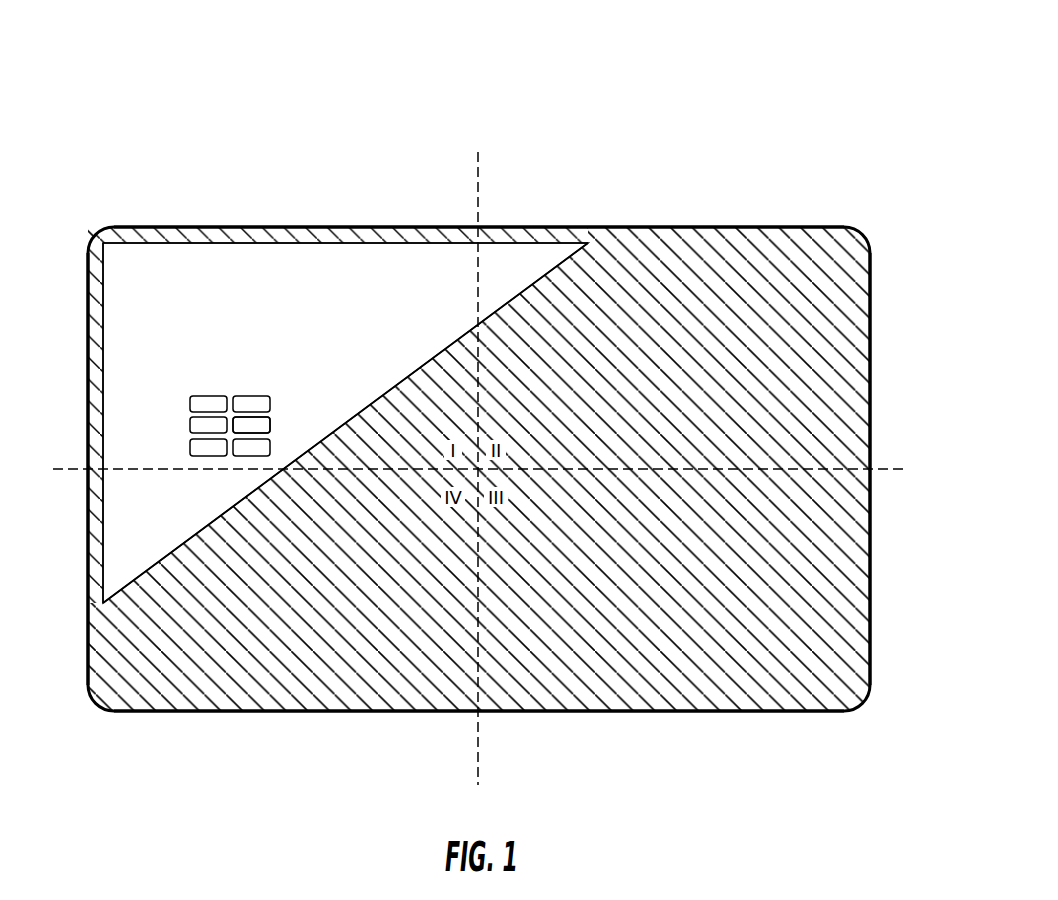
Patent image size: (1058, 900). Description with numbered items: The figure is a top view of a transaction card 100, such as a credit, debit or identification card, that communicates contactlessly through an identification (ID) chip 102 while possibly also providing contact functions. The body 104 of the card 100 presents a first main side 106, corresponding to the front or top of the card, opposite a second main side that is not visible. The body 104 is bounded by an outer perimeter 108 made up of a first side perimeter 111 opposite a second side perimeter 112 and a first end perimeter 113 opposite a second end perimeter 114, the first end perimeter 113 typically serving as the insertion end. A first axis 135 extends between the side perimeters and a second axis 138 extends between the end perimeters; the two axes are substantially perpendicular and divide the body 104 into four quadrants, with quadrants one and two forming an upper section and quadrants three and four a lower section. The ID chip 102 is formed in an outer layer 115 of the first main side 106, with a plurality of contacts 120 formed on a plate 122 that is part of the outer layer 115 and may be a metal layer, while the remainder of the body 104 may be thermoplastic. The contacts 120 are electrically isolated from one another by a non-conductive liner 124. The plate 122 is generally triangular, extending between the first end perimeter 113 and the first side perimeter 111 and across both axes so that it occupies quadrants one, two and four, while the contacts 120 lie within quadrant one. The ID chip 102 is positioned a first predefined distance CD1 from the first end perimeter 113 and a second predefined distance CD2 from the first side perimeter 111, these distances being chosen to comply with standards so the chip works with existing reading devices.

The transaction card 100 is at (646, 115).
The identification (ID) chip 102 is at (181, 425).
The body 104 is at (792, 228).
The first main side 106 is at (689, 248).
The outer perimeter 108 is at (258, 712).
The first side perimeter 111 is at (381, 227).
The second side perimeter 112 is at (605, 713).
The first end perimeter 113 is at (88, 310).
The second end perimeter 114 is at (870, 337).
The outer layer 115 is at (167, 670).
The contacts 120 is at (253, 402).
The plate 122 is at (263, 265).
The liner 124 is at (270, 427).
The first axis 135 is at (479, 172).
The second axis 138 is at (885, 470).
The first predefined distance CD1 is at (190, 446).
The second predefined distance CD2 is at (208, 243).